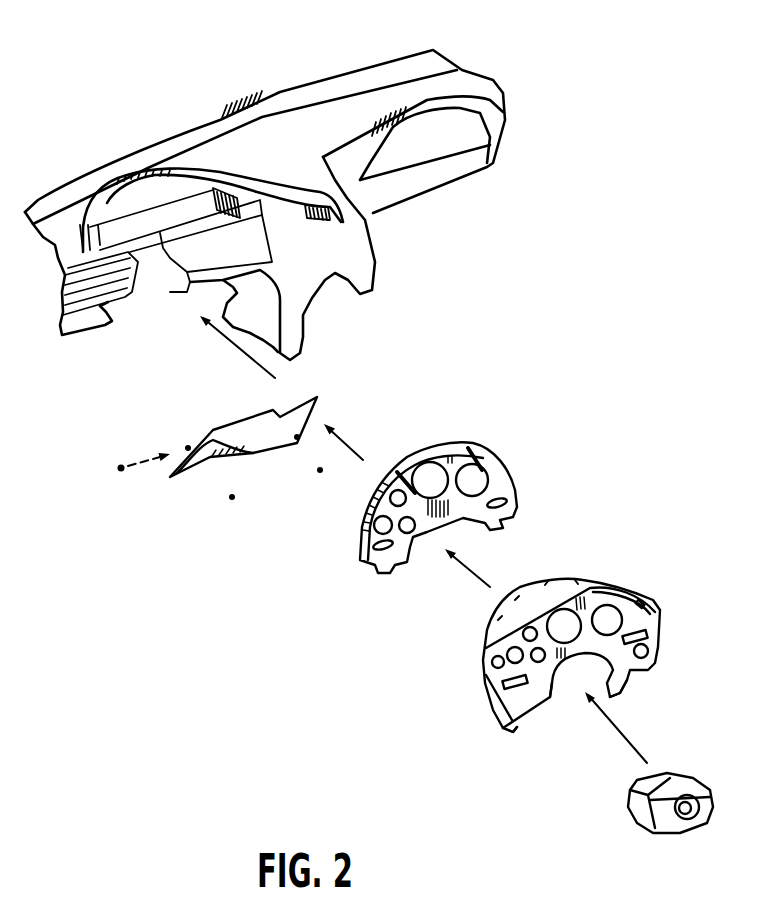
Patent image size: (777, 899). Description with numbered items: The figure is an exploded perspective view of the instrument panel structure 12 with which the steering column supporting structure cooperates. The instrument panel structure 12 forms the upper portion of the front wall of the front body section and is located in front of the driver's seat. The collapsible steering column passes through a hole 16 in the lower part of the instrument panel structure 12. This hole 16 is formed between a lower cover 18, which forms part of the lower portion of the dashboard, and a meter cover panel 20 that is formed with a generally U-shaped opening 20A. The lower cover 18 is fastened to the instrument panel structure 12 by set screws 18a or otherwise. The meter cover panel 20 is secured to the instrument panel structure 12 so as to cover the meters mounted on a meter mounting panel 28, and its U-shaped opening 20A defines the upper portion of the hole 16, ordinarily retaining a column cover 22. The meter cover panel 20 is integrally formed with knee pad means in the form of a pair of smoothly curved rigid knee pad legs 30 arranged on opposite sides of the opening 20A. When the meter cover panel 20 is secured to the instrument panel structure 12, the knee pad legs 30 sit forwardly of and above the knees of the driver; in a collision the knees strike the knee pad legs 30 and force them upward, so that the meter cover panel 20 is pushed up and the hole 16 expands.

The instrument panel structure 12 is at (327, 110).
The hole 16 is at (155, 308).
The lower cover 18 is at (270, 437).
The set screws 18a is at (232, 497).
The meter cover panel 20 is at (590, 587).
The U-shaped opening 20A is at (567, 684).
The column cover 22 is at (690, 777).
The meter mounting panel 28 is at (503, 488).
The knee pad legs 30 is at (628, 682).